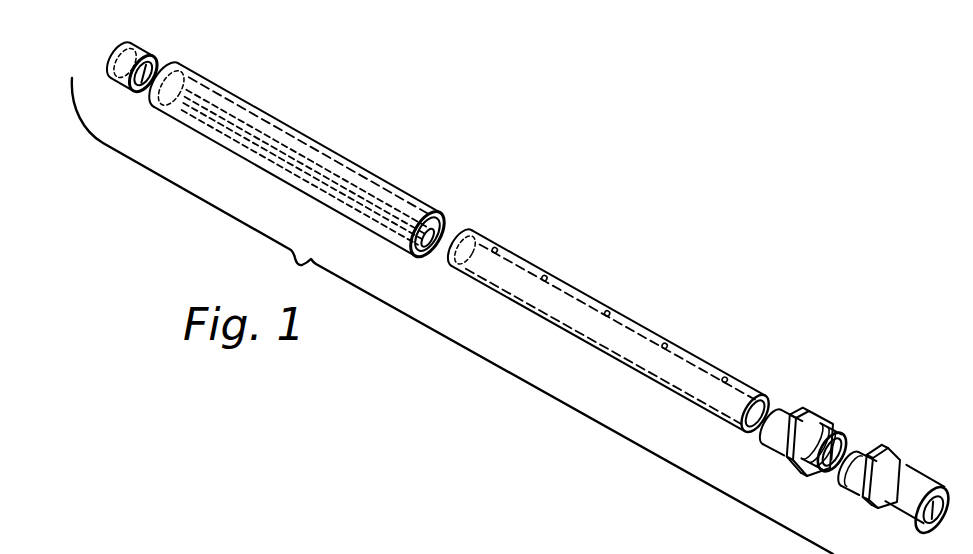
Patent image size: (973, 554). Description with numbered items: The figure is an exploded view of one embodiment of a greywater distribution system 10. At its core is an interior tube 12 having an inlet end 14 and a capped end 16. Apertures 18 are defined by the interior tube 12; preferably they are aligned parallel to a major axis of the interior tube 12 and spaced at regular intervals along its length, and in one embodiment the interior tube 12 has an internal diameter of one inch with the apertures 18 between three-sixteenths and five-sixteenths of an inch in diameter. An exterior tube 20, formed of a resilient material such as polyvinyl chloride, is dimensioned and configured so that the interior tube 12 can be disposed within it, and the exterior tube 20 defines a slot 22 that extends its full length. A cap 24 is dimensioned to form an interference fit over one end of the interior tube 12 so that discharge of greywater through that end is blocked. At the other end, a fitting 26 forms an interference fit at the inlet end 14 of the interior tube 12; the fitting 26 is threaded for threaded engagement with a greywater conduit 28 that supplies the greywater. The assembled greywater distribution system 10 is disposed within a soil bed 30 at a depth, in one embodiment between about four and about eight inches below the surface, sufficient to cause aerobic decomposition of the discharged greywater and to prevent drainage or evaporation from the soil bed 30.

The greywater distribution system 10 is at (630, 219).
The interior tube 12 is at (683, 368).
The inlet end 14 is at (769, 400).
The capped end 16 is at (457, 232).
The apertures 18 is at (500, 251).
The exterior tube 20 is at (362, 168).
The slot 22 is at (428, 254).
The cap 24 is at (144, 48).
The fitting 26 is at (828, 430).
The greywater conduit 28 is at (913, 493).
The soil bed 30 is at (177, 553).